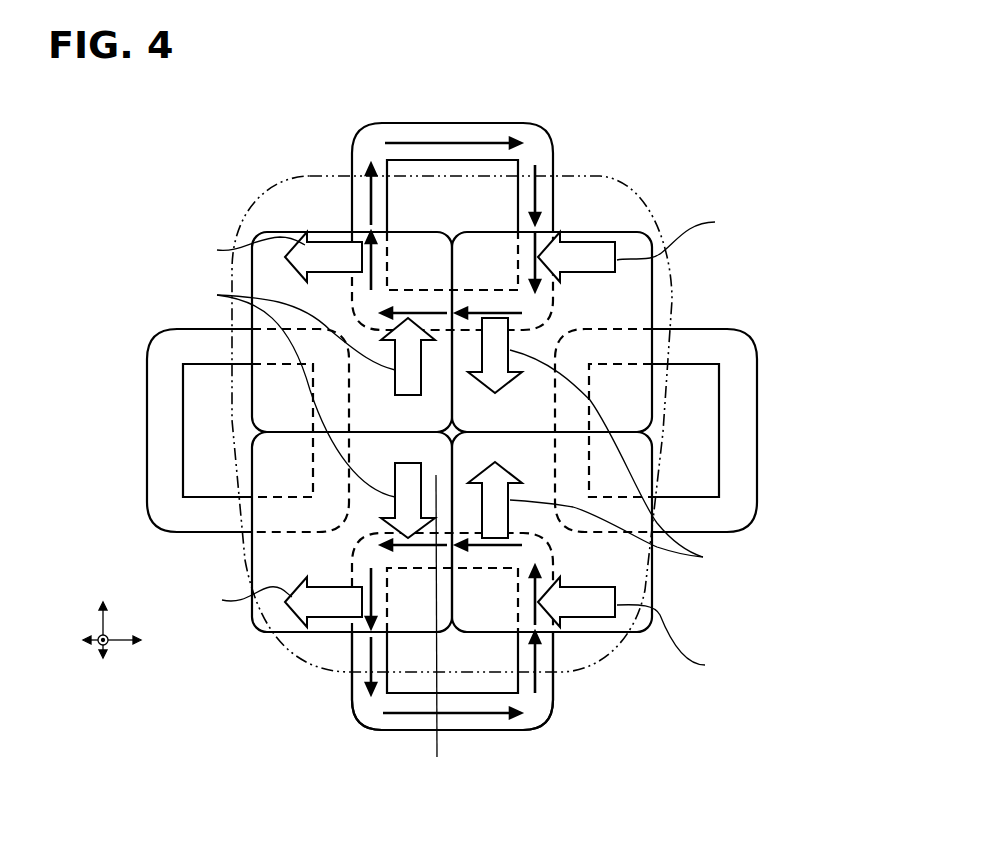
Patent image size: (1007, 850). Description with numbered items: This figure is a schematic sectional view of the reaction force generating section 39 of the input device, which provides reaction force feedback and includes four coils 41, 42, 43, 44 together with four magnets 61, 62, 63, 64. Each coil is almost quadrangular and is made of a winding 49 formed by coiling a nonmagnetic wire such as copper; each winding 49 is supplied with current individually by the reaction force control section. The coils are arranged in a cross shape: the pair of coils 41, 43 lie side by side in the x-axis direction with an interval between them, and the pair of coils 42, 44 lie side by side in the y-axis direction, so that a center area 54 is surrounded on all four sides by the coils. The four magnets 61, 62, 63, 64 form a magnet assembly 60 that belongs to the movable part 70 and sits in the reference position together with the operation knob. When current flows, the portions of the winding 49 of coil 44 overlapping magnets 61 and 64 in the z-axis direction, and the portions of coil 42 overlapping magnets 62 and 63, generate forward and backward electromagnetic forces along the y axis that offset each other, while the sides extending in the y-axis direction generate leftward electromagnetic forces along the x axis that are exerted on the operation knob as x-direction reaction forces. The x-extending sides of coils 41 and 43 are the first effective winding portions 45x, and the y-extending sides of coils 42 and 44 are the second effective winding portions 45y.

The reaction force generating section 39 is at (638, 166).
The coil 41 is at (755, 378).
The coil 42 is at (552, 693).
The coil 43 is at (147, 378).
The coil 44 is at (461, 427).
The first effective winding portions 45x is at (223, 352).
The second effective winding portions 45y is at (362, 200).
The winding 49 is at (364, 152).
The center area 54 is at (439, 631).
The magnet assembly 60 is at (473, 426).
The magnet 61 is at (652, 282).
The magnet 62 is at (652, 590).
The magnet 63 is at (270, 632).
The magnet 64 is at (270, 232).
The movable part 70 is at (672, 293).